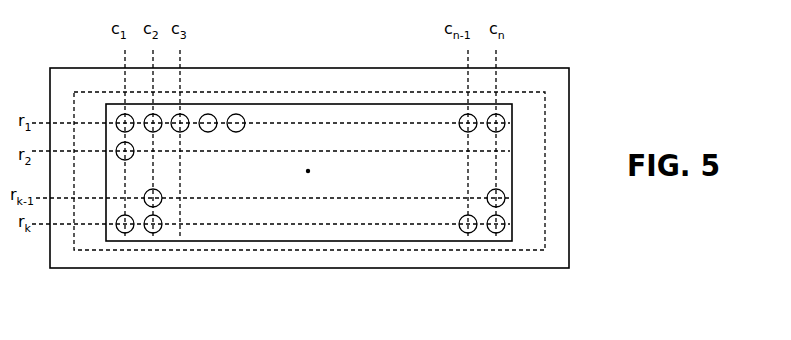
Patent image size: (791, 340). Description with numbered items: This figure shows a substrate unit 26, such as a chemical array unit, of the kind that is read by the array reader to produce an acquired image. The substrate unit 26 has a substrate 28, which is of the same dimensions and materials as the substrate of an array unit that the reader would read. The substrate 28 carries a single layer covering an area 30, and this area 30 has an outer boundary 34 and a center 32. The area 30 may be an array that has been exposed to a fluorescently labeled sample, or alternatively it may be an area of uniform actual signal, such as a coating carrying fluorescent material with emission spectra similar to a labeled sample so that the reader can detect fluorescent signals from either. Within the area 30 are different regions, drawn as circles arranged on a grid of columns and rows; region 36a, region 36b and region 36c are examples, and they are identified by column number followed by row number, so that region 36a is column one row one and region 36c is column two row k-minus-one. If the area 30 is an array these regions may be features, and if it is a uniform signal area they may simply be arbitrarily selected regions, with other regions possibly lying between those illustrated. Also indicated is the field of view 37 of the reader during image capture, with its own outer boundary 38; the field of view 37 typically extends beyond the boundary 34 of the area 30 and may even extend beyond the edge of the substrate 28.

The substrate unit 26 is at (556, 78).
The substrate 28 is at (552, 209).
The area 30 is at (358, 115).
The center 32 is at (308, 171).
The outer boundary 34 is at (412, 100).
The region 36a is at (123, 120).
The region 36b is at (236, 118).
The region 36c is at (153, 198).
The field of view 37 is at (531, 225).
The outer boundary of field of view 38 is at (547, 127).